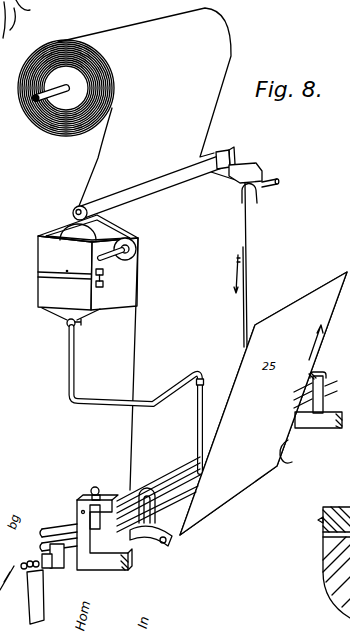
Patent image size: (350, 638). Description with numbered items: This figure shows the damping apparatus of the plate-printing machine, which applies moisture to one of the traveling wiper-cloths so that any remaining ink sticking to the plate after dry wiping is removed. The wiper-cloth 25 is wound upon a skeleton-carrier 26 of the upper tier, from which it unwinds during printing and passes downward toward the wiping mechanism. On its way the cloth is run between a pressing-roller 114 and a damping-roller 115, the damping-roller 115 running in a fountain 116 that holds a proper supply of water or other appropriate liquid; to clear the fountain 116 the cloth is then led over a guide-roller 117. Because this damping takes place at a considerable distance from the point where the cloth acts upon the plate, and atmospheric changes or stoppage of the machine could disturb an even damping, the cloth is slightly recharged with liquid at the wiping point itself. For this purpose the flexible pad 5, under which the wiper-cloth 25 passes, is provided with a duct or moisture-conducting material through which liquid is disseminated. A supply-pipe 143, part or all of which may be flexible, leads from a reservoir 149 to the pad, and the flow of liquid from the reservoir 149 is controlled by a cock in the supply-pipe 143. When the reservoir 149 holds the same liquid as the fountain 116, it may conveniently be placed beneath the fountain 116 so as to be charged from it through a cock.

The skeleton-carrier 26 is at (66, 88).
The wiper-cloth 25 is at (202, 271).
The pressing-roller 114 is at (176, 183).
The damping-roller 115 is at (88, 228).
The fountain 116 is at (88, 273).
The guide-roller 117 is at (139, 246).
The reservoir 149 is at (43, 296).
The supply-pipe 143 is at (103, 397).
The flexible pad 5 is at (147, 542).